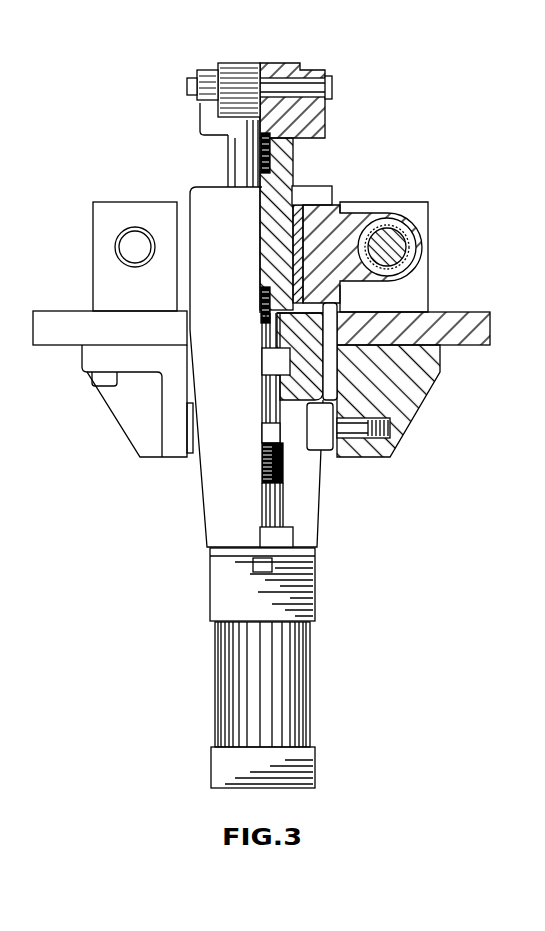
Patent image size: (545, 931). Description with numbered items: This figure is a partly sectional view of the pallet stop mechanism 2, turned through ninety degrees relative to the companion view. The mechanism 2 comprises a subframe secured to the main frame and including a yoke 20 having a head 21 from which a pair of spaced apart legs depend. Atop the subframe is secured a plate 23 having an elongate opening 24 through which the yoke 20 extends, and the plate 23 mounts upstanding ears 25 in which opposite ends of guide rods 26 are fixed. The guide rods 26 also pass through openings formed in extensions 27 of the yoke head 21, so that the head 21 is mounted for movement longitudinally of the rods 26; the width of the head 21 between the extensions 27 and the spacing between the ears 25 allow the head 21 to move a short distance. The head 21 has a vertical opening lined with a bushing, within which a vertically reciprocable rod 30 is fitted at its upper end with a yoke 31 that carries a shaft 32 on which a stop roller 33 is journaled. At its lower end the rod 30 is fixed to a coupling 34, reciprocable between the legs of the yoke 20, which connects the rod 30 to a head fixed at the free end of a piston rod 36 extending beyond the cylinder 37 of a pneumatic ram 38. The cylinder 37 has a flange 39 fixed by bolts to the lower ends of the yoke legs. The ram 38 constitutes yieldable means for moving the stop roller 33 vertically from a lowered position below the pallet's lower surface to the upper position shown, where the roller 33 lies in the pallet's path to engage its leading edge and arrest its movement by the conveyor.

The pallet stop mechanism 2 is at (171, 506).
The yoke 20 is at (347, 178).
The head 21 is at (340, 192).
The plate 23 is at (460, 312).
The elongate opening 24 is at (333, 308).
The upstanding ears 25 is at (131, 202).
The guide rods 26 is at (405, 248).
The extensions 27 is at (407, 228).
The vertically reciprocable rod 30 is at (283, 166).
The yoke 31 is at (325, 113).
The shaft 32 is at (313, 83).
The stop roller 33 is at (250, 63).
The coupling 34 is at (268, 322).
The piston rod 36 is at (283, 480).
The cylinder 37 is at (310, 640).
The pneumatic ram 38 is at (314, 687).
The flange 39 is at (305, 553).